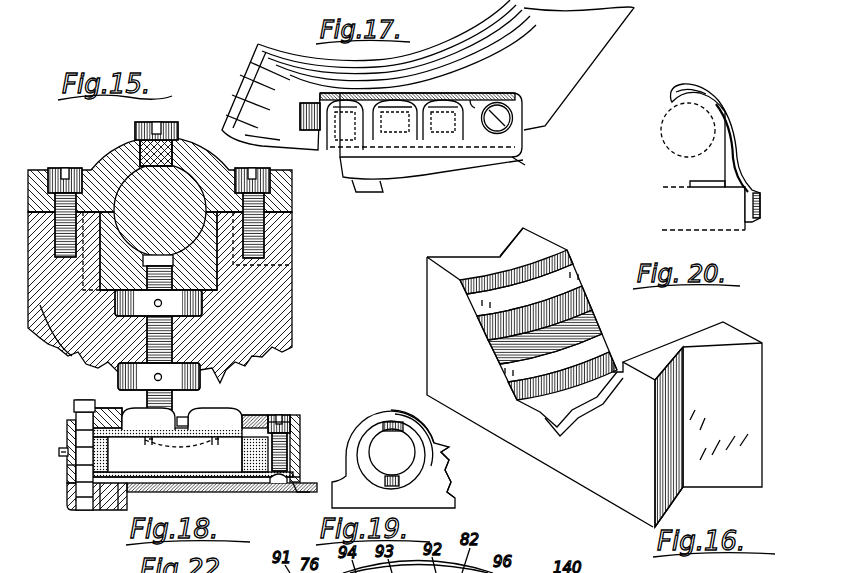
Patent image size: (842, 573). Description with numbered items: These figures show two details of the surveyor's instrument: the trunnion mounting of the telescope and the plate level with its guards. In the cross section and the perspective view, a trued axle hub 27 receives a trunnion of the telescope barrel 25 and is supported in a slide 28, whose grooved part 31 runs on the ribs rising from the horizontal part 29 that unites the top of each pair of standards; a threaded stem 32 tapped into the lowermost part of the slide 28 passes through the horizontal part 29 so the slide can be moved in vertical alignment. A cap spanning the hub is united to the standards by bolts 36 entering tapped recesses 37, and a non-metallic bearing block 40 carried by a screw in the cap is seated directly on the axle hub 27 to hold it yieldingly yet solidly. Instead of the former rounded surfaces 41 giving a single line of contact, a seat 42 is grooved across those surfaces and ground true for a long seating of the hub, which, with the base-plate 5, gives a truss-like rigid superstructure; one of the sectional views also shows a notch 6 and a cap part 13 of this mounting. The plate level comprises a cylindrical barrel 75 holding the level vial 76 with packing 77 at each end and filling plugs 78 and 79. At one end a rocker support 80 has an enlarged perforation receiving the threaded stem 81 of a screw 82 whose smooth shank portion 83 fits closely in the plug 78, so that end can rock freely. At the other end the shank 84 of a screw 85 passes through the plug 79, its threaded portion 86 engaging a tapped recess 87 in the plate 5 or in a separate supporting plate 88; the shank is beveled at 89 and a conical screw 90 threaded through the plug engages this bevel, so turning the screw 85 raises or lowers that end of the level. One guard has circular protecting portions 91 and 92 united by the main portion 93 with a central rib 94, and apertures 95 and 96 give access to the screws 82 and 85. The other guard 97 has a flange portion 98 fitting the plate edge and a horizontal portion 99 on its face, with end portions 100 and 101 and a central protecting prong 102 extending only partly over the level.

In FIG. 19, the base-plate 5 is at (393, 459).
In FIG. 17, the base-plate 5 is at (606, 31).
In FIG. 20, the base-plate 5 is at (703, 166).
In FIG. 19, the notch 6 is at (444, 453).
In FIG. 15, the cap 13 is at (118, 152).
In FIG. 17, the telescope barrel 25 is at (510, 108).
In FIG. 15, the axle hub 27 is at (178, 168).
In FIG. 15, the slide 28 is at (218, 267).
In FIG. 16, the slide 28 is at (605, 492).
In FIG. 15, the horizontal part 29 is at (135, 342).
In FIG. 16, the grooved part 31 is at (472, 256).
In FIG. 15, the threaded stem 32 is at (173, 404).
In FIG. 15, the bolt 36 is at (53, 168).
In FIG. 15, the tapped recess 37 is at (236, 268).
In FIG. 15, the non-metallic bearing block 40 is at (156, 124).
In FIG. 16, the arcuate surface 41 is at (560, 278).
In FIG. 15, the seat 42 is at (225, 283).
In FIG. 16, the seat 42 is at (500, 355).
In FIG. 18, the cylindrical barrel 75 is at (247, 484).
In FIG. 19, the cylindrical barrel 75 is at (413, 440).
In FIG. 18, the level vial 76 is at (118, 496).
In FIG. 17, the level vial 76 is at (447, 115).
In FIG. 18, the packing 77 is at (100, 500).
In FIG. 18, the filling plug 78 is at (294, 446).
In FIG. 18, the filling plug 79 is at (68, 441).
In FIG. 18, the rocker support 80 is at (292, 481).
In FIG. 18, the threaded stem 81 is at (278, 492).
In FIG. 18, the screw 82 is at (280, 414).
In FIG. 18, the smooth shank portion 83 is at (298, 421).
In FIG. 18, the shank 84 is at (68, 428).
In FIG. 18, the screw 85 is at (93, 396).
In FIG. 18, the threaded portion 86 is at (70, 487).
In FIG. 18, the tapped recess 87 is at (80, 511).
In FIG. 18, the supporting plate 88 is at (129, 463).
In FIG. 18, the beveled portion 89 is at (68, 467).
In FIG. 18, the conical screw 90 is at (59, 453).
In FIG. 18, the circular protecting portion 91 is at (128, 422).
In FIG. 18, the circular protecting portion 92 is at (248, 420).
In FIG. 19, the circular protecting portion 92 is at (391, 420).
In FIG. 19, the main portion of the guard 93 is at (347, 440).
In FIG. 18, the central rib 94 is at (188, 421).
In FIG. 18, the aperture 95 is at (100, 408).
In FIG. 18, the aperture 96 is at (274, 406).
In FIG. 17, the guard 97 is at (472, 152).
In FIG. 20, the guard 97 is at (736, 132).
In FIG. 17, the flange portion 98 is at (410, 175).
In FIG. 20, the flange portion 98 is at (752, 190).
In FIG. 20, the horizontal portion 99 is at (703, 178).
In FIG. 17, the end portion 100 is at (343, 130).
In FIG. 17, the end portion 101 is at (522, 152).
In FIG. 17, the central protecting prong 102 is at (470, 100).
In FIG. 20, the central protecting prong 102 is at (700, 78).